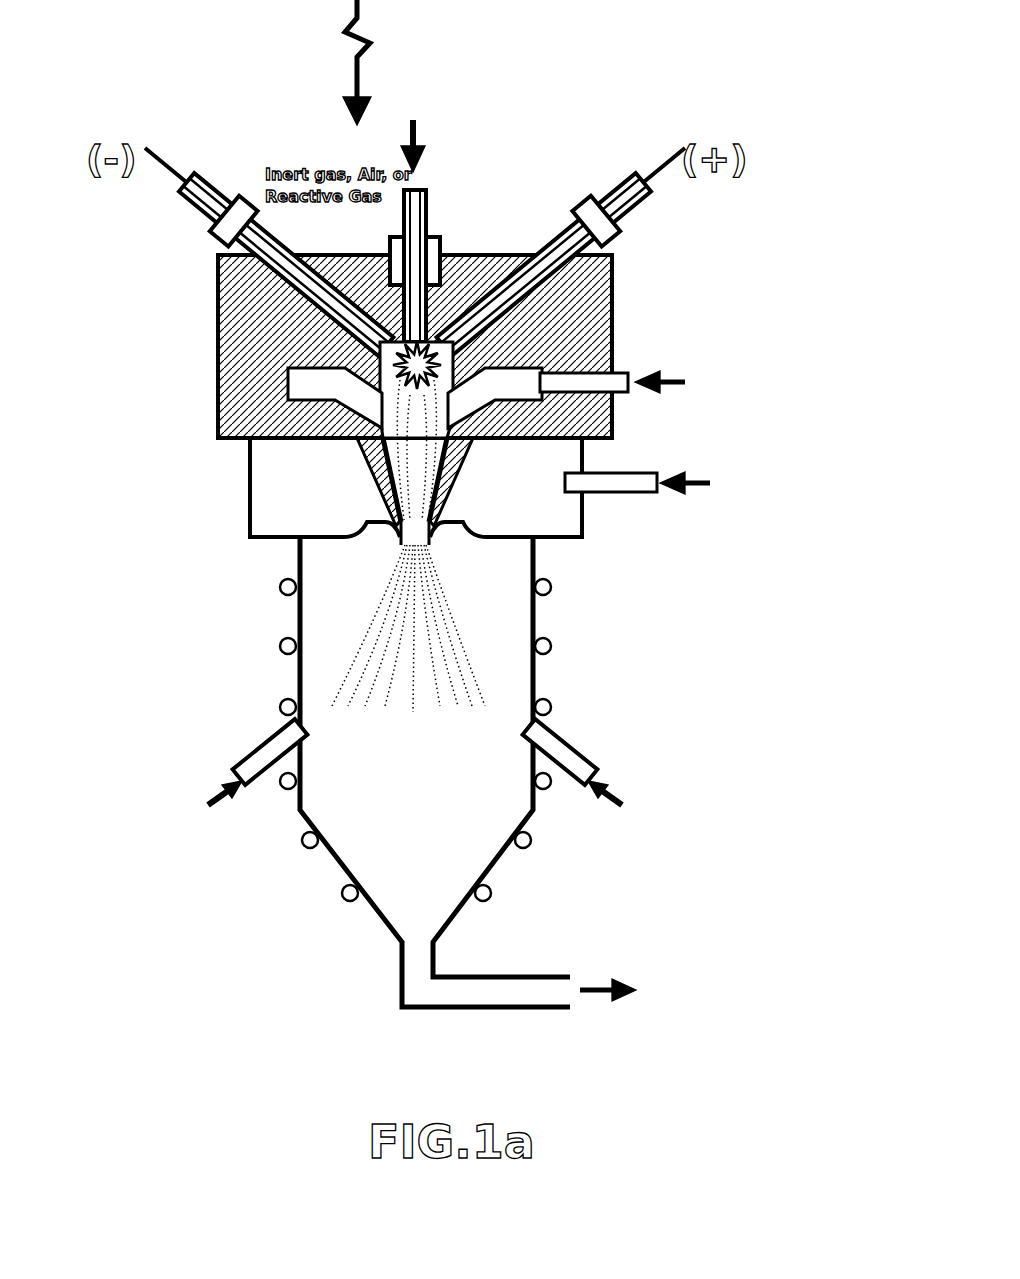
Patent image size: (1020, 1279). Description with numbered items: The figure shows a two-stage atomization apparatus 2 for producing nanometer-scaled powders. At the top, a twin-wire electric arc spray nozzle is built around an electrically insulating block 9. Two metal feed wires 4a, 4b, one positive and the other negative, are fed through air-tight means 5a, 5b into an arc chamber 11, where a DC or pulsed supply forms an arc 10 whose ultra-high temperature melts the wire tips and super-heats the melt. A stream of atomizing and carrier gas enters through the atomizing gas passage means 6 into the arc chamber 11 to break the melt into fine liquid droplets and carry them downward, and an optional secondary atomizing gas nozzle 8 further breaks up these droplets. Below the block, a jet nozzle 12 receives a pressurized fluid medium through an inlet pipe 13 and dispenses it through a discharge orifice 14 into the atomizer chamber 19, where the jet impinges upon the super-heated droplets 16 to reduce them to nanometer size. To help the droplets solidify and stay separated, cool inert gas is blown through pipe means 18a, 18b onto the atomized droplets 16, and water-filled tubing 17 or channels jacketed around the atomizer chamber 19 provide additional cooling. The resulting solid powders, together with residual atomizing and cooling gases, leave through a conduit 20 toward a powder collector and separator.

The two-stage atomization apparatus 2 is at (381, 62).
The feed wire 4a is at (655, 157).
The feed wire 4b is at (180, 162).
The air-tight means 5a is at (585, 220).
The air-tight means 5b is at (237, 224).
The atomizing gas passage means 6 is at (415, 264).
The secondary atomizing gas nozzle 8 is at (613, 360).
The electrically insulating block 9 is at (255, 313).
The arc 10 is at (400, 373).
The arc chamber 11 is at (410, 425).
The jet nozzle 12 is at (315, 503).
The inlet pipe 13 is at (610, 490).
The discharge orifice 14 is at (277, 557).
The liquid droplets 16 is at (432, 653).
The cooling tubing 17 is at (278, 592).
The pipe means 18a is at (272, 752).
The pipe means 18b is at (575, 752).
The atomizer chamber 19 is at (536, 605).
The conduit 20 is at (433, 992).